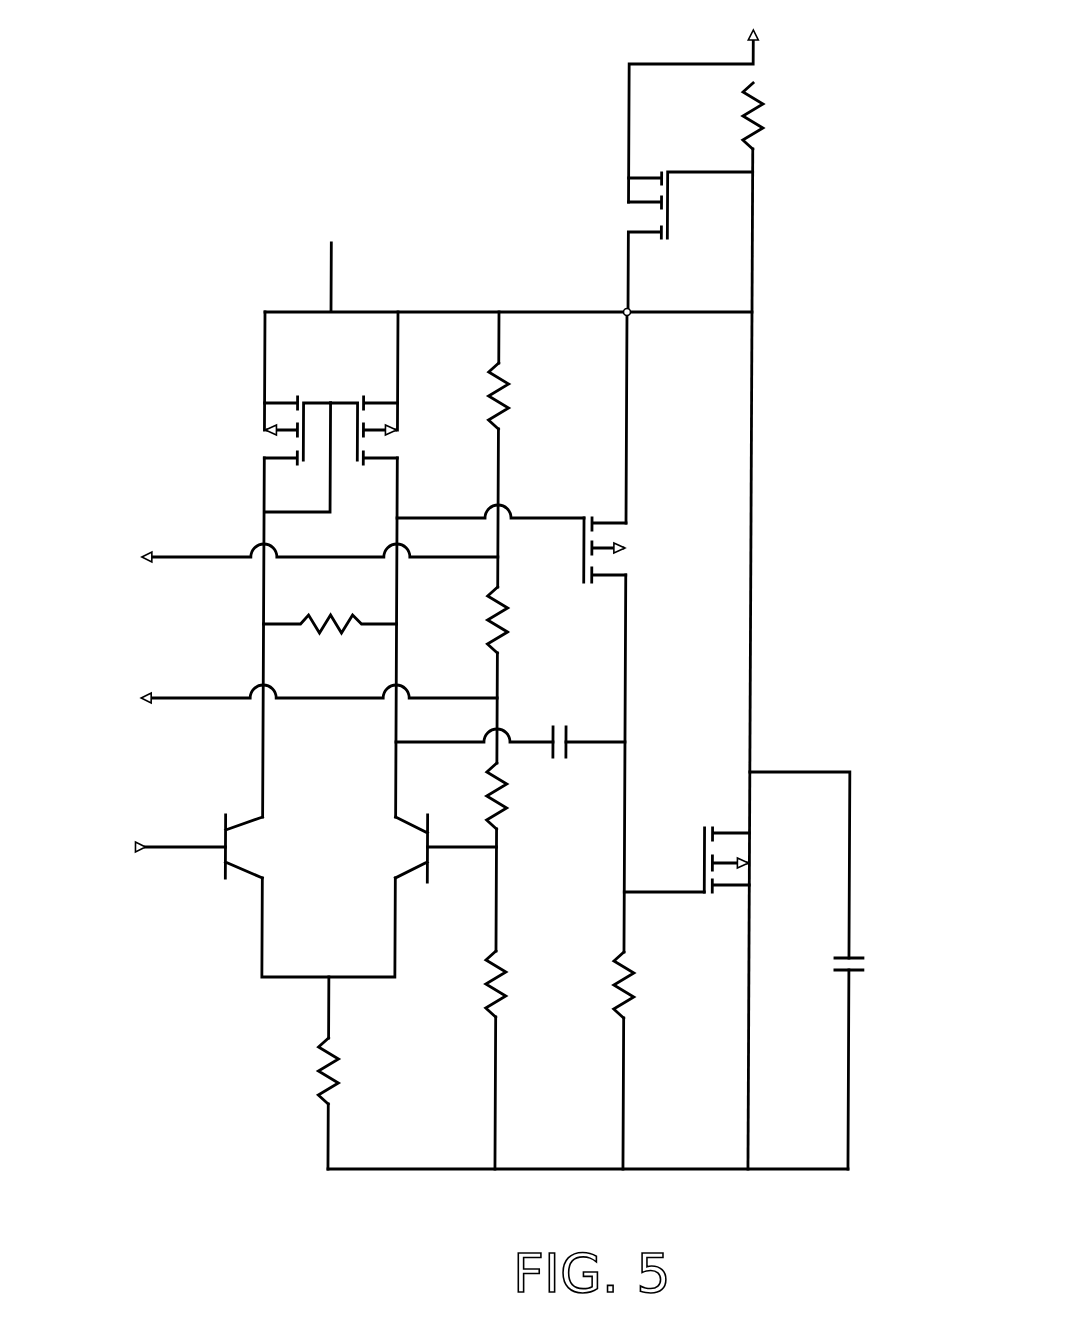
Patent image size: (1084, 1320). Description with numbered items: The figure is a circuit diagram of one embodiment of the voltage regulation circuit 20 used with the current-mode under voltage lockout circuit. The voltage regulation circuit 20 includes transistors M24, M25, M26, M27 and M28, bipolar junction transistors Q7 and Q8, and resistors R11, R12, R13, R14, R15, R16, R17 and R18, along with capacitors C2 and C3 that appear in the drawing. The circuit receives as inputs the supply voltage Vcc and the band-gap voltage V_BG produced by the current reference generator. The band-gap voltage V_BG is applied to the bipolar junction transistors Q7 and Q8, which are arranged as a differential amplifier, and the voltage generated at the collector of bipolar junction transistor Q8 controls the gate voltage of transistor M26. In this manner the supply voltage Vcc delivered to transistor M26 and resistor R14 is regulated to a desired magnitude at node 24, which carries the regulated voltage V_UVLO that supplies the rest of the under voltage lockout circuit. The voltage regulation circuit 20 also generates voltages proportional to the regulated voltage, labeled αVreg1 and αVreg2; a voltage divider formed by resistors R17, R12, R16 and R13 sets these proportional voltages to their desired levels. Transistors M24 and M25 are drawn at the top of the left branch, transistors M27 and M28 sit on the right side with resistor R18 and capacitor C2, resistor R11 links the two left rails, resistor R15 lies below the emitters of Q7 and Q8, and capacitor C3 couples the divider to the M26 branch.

The voltage regulation circuit 20 is at (208, 309).
The node 24 is at (626, 311).
The resistor R18 is at (786, 116).
The transistor M28 is at (658, 242).
The transistor M24 is at (264, 430).
The transistor M25 is at (398, 430).
The resistor R17 is at (528, 396).
The resistor R12 is at (527, 620).
The resistor R16 is at (527, 796).
The resistor R13 is at (465, 984).
The resistor R14 is at (593, 985).
The resistor R15 is at (299, 1071).
The resistor R11 is at (329, 607).
The transistor M26 is at (640, 550).
The capacitor C3 is at (561, 724).
The bipolar junction transistor Q7 is at (234, 829).
The bipolar junction transistor Q8 is at (420, 831).
The transistor M27 is at (759, 860).
The capacitor C2 is at (871, 974).